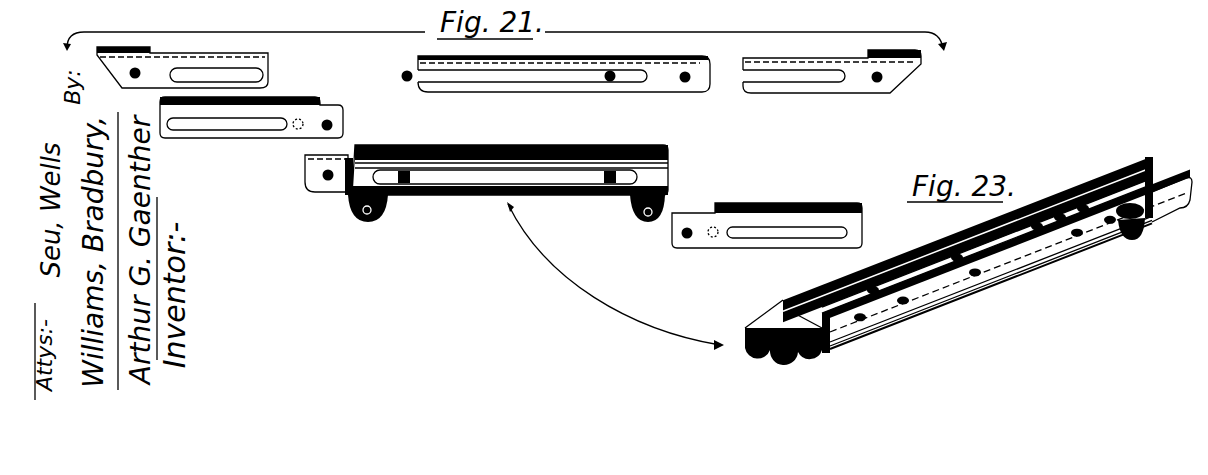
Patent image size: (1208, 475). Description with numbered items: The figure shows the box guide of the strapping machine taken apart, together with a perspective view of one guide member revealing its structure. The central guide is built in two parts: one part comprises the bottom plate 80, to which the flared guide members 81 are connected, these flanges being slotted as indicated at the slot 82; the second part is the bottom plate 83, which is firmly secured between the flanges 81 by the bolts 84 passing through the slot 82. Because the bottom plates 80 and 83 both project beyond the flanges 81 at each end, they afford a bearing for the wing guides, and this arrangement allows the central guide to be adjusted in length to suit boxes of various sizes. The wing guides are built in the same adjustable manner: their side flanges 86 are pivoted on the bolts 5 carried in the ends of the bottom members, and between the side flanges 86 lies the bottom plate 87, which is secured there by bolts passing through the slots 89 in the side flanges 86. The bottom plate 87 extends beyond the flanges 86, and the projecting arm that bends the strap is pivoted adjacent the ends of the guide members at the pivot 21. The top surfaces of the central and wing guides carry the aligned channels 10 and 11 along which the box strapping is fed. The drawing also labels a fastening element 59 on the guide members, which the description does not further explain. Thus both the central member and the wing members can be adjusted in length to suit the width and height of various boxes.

In FIG. 21, the bolt 5 is at (329, 119).
In FIG. 23, the bolt 5 is at (1072, 190).
In FIG. 23, the channel 10 is at (1120, 172).
In FIG. 21, the channel 11 is at (134, 48).
In FIG. 23, the channel 11 is at (837, 302).
In FIG. 21, the pivot 21 is at (148, 50).
In FIG. 21, the bolt 59 is at (406, 70).
In FIG. 23, the bolt 59 is at (1136, 240).
In FIG. 21, the bottom plate 80 is at (308, 156).
In FIG. 23, the bottom plate 80 is at (768, 325).
In FIG. 21, the flared guide member 81 is at (540, 160).
In FIG. 23, the flared guide member 81 is at (912, 250).
In FIG. 21, the slot 82 is at (483, 84).
In FIG. 23, the slot 82 is at (1032, 200).
In FIG. 21, the bottom plate 83 is at (547, 62).
In FIG. 23, the bolt 84 is at (1093, 237).
In FIG. 21, the side flange 86 is at (200, 139).
In FIG. 21, the bottom plate 87 is at (240, 55).
In FIG. 21, the slot 89 is at (265, 72).